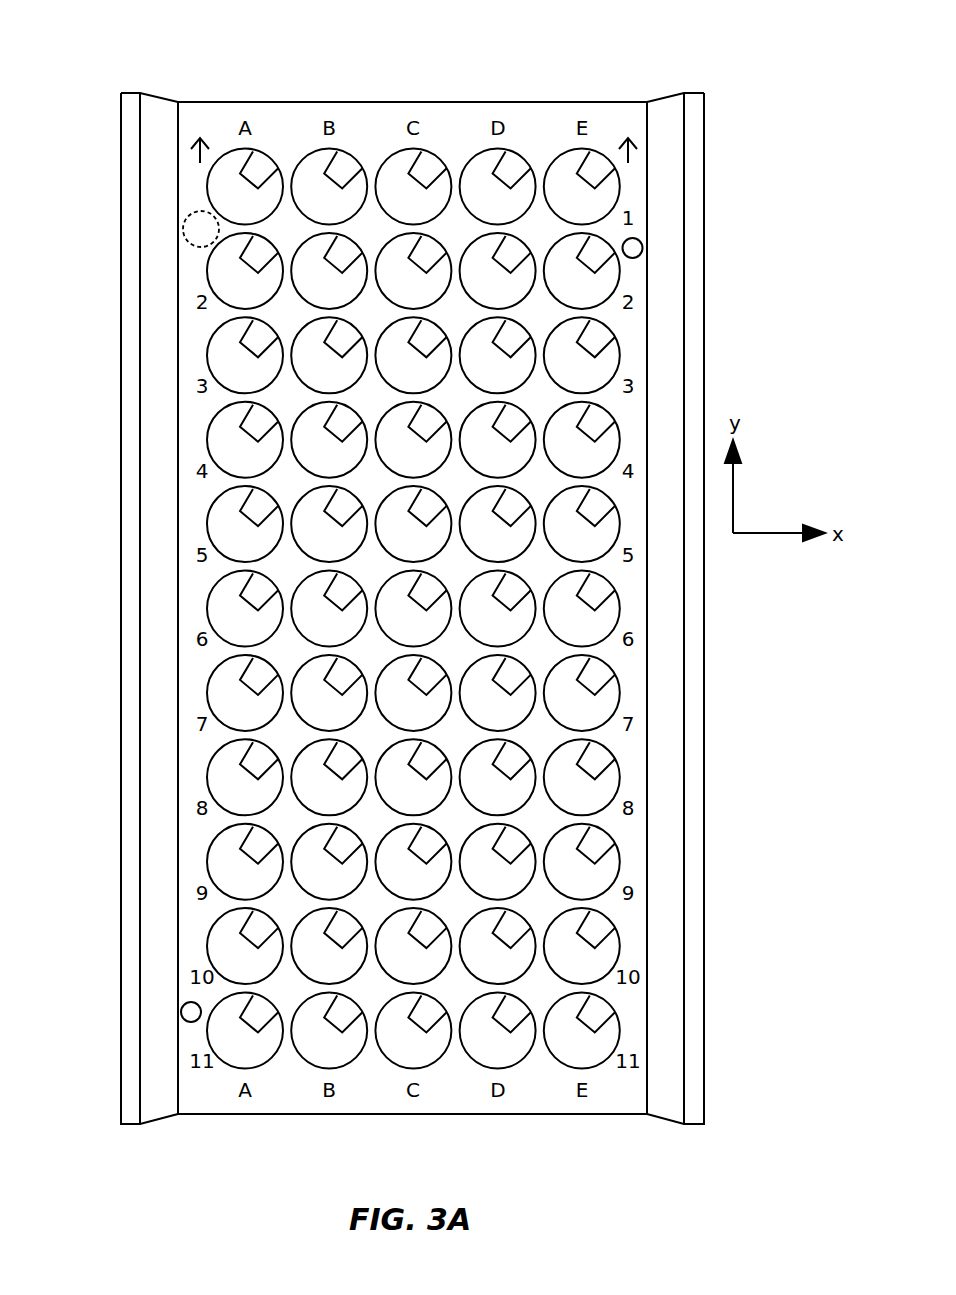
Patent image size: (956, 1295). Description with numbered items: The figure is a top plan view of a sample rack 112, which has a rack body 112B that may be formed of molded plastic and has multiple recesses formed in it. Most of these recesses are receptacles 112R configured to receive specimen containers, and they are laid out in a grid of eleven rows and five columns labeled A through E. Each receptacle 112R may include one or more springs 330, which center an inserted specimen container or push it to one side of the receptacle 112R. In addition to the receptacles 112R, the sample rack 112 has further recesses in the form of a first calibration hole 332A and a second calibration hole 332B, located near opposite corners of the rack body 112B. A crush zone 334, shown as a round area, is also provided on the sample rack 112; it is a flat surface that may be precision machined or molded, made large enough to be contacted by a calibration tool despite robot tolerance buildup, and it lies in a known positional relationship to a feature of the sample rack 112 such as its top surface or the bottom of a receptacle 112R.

The sample rack 112 is at (474, 86).
The rack body 112B is at (290, 102).
The receptacles 112R is at (205, 277).
The springs 330 is at (237, 510).
The first calibration hole 332A is at (642, 248).
The second calibration hole 332B is at (181, 1012).
The crush zone 334 is at (186, 215).